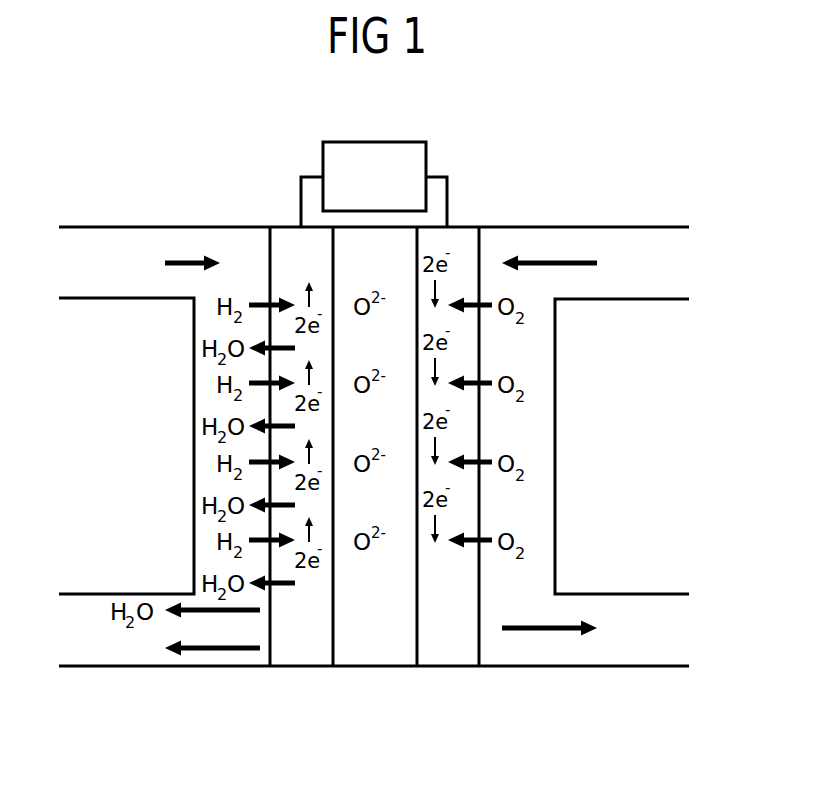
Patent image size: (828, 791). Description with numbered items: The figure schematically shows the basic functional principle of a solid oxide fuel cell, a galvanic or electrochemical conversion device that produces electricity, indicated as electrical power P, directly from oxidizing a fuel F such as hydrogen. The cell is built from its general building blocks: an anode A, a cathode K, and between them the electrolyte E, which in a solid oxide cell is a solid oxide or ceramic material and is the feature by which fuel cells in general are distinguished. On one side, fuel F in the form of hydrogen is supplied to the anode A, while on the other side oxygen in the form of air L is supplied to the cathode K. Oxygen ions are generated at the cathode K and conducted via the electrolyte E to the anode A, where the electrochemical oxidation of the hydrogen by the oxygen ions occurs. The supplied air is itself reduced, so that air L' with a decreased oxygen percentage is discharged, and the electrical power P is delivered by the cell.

The electrical power P is at (383, 193).
The fuel F is at (202, 456).
The air L is at (560, 264).
The air with decreased oxygen percentage L' is at (564, 629).
The anode A is at (303, 653).
The electrolyte E is at (380, 653).
The cathode K is at (456, 653).